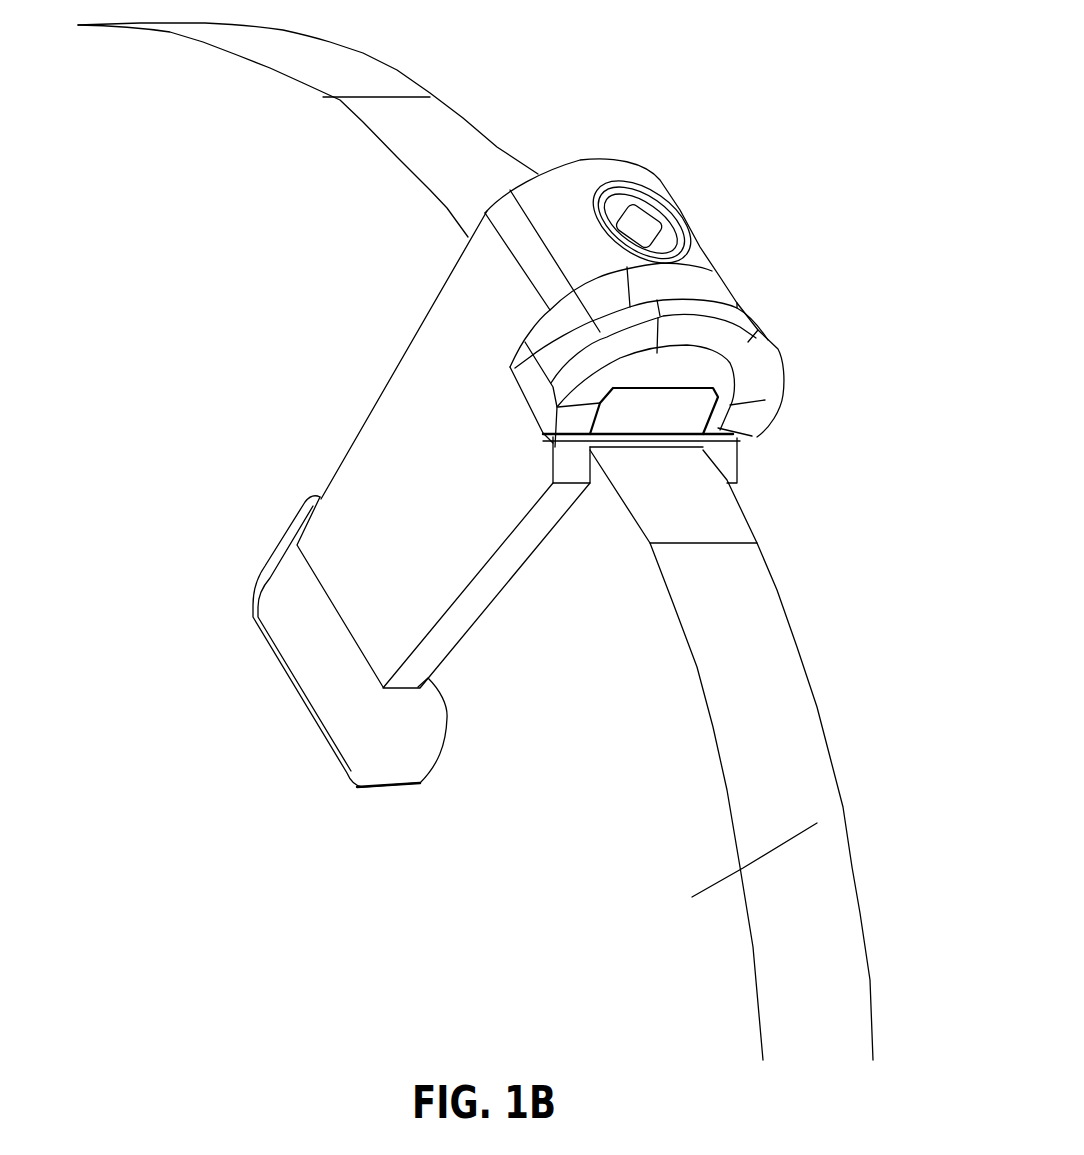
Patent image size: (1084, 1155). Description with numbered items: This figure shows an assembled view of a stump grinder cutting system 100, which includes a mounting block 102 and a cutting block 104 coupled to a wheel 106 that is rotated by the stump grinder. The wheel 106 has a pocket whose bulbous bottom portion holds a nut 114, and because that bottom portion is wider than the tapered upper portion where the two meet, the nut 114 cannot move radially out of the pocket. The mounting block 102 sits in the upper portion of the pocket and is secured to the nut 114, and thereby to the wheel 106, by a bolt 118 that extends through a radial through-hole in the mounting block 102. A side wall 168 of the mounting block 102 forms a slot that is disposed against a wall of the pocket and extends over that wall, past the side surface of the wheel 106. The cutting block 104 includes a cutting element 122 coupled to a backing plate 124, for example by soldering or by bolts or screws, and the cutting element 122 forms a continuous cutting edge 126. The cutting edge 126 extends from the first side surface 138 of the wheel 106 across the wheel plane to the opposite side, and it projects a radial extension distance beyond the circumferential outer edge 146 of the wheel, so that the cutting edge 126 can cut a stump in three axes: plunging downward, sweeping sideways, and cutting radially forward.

The cutting system 100 is at (668, 94).
The mounting block 102 is at (543, 207).
The cutting block 104 is at (754, 156).
The wheel 106 is at (247, 103).
The nut 114 is at (293, 595).
The bolt 118 is at (642, 248).
The cutting element 122 is at (753, 373).
The backing plate 124 is at (710, 292).
The cutting edge 126 is at (753, 331).
The first side surface 138 is at (817, 823).
The circumferential outer edge 146 is at (773, 642).
The side wall 168 is at (407, 403).